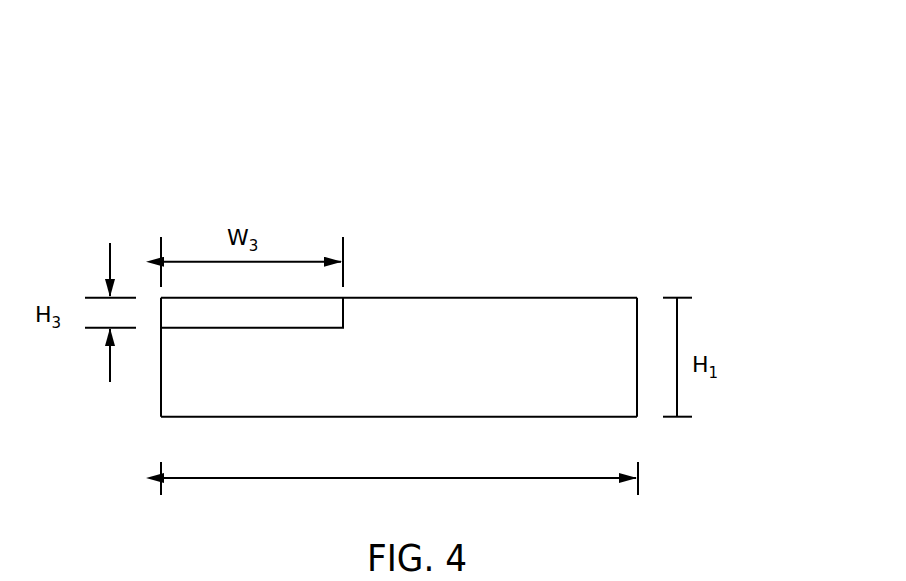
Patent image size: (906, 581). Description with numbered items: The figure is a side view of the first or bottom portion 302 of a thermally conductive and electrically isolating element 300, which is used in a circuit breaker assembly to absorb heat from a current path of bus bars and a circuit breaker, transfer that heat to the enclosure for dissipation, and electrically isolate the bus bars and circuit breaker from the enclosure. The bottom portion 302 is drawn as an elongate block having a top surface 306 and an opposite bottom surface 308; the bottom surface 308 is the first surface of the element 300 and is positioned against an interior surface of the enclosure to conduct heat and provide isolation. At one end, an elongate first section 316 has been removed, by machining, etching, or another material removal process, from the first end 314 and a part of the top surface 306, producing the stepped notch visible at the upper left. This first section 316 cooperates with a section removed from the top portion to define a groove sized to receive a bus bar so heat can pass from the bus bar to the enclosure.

The thermally conductive and electrically isolating element 300 is at (694, 66).
The bottom portion 302 is at (700, 255).
The top surface 306 is at (443, 297).
The bottom surface 308 is at (557, 417).
The first end 314 is at (156, 423).
The first section 316 is at (325, 313).